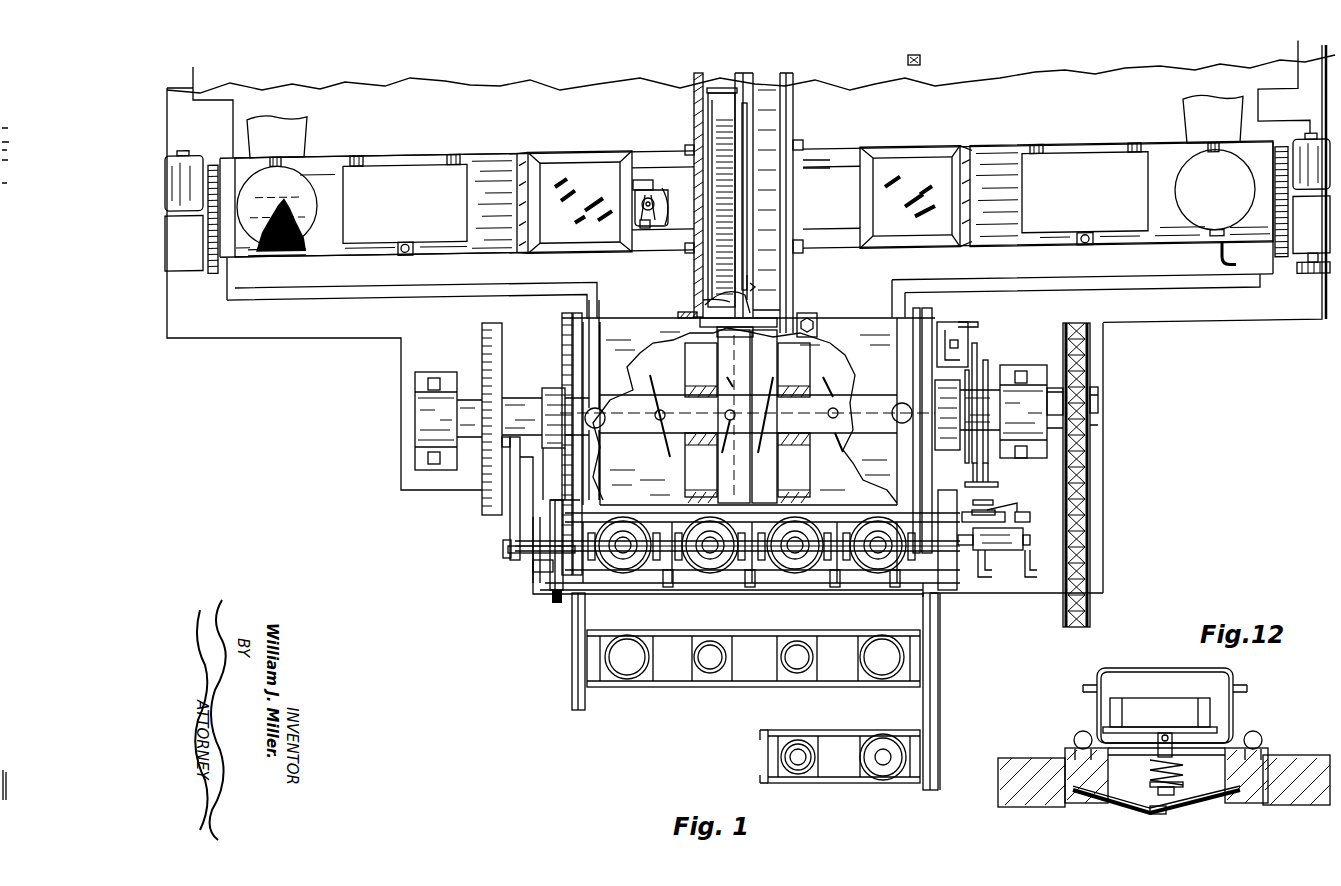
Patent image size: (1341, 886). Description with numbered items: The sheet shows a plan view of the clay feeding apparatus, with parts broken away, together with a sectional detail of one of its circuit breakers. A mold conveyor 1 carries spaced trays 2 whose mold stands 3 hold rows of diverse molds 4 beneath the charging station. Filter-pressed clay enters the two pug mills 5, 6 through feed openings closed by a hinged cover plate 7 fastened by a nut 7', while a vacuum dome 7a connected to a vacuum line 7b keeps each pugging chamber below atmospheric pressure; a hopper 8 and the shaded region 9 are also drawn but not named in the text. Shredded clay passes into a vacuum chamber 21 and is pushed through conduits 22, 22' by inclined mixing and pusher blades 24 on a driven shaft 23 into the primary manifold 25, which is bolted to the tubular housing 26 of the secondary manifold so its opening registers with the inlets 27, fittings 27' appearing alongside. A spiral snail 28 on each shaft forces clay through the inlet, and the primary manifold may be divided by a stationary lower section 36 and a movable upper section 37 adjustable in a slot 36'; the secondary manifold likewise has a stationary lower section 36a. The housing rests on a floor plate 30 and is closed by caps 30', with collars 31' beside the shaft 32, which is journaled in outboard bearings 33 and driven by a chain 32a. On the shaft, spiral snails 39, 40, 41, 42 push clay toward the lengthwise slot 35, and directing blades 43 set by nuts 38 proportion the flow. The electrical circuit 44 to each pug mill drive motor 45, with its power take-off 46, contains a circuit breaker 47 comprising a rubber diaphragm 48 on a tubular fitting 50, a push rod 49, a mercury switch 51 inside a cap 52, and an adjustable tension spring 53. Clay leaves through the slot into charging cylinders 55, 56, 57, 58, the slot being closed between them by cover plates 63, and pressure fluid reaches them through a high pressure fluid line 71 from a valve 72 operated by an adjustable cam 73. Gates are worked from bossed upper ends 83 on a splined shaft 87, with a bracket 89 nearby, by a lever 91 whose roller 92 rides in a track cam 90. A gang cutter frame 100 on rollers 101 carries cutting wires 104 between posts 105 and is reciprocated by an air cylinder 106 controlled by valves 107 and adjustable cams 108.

In FIG. 1, the mold conveyor 1 is at (572, 712).
In FIG. 1, the trays 2 is at (683, 686).
In FIG. 1, the mold stands 3 is at (800, 686).
In FIG. 1, the molds 4 is at (800, 786).
In FIG. 1, the pug mill 5 is at (492, 159).
In FIG. 1, the pug mill 6 is at (978, 159).
In FIG. 1, the hinged cover plate 7 is at (745, 177).
In FIG. 1, the nut 7' is at (727, 255).
In FIG. 1, the vacuum dome 7a is at (290, 186).
In FIG. 1, the vacuum line 7b is at (1215, 262).
In FIG. 1, the hopper 8 is at (326, 133).
In FIG. 1, the flame 9 is at (290, 255).
In FIG. 1, the vacuum chamber 21 is at (552, 161).
In FIG. 1, the conduit 22 is at (651, 186).
In FIG. 1, the conduit 22' is at (828, 154).
In FIG. 1, the driven shaft 23 is at (650, 227).
In FIG. 1, the mixing and pusher blades 24 is at (665, 230).
In FIG. 1, the primary manifold 25 is at (752, 301).
In FIG. 1, the tubular housing 26 is at (850, 318).
In FIG. 12, the tubular housing 26 is at (1008, 760).
In FIG. 1, the inlets 27 is at (738, 331).
In FIG. 1, the bracket 27' is at (759, 196).
In FIG. 1, the spiral snail 28 is at (712, 108).
In FIG. 1, the floor plate 30 is at (1214, 186).
In FIG. 1, the caps 30' is at (750, 437).
In FIG. 1, the collar 31' is at (747, 430).
In FIG. 1, the shaft 32 is at (510, 400).
In FIG. 1, the chain 32a is at (1095, 546).
In FIG. 1, the outboard bearings 33 is at (425, 376).
In FIG. 1, the slot 35 is at (628, 513).
In FIG. 1, the stationary lower section 36 is at (681, 303).
In FIG. 1, the slot 36' is at (787, 280).
In FIG. 1, the stationary lower section 36a is at (732, 461).
In FIG. 1, the vertically movable upper section 37 is at (750, 111).
In FIG. 1, the nuts 38 is at (838, 414).
In FIG. 1, the spiral snail 39 is at (640, 479).
In FIG. 1, the spiral snail 40 is at (690, 485).
In FIG. 1, the spiral snail 41 is at (812, 479).
In FIG. 1, the spiral snail 42 is at (850, 481).
In FIG. 1, the clay propelling, proportioning and directing blades 43 is at (659, 391).
In FIG. 1, the electrical circuit 44 is at (408, 291).
In FIG. 1, the pug mill drive motor 45 is at (210, 164).
In FIG. 1, the power take-off 46 is at (1310, 283).
In FIG. 1, the circuit breaker 47 is at (606, 417).
In FIG. 12, the circuit breaker 47 is at (1257, 719).
In FIG. 12, the rubber diaphragm 48 is at (1205, 809).
In FIG. 12, the push rod 49 is at (1150, 770).
In FIG. 12, the tubular fitting 50 is at (1290, 748).
In FIG. 12, the mercury switch 51 is at (1145, 712).
In FIG. 12, the cap 52 is at (1128, 668).
In FIG. 12, the adjustable tension spring 53 is at (1180, 770).
In FIG. 1, the charging cylinder 55 is at (622, 593).
In FIG. 1, the charging cylinder 56 is at (706, 593).
In FIG. 1, the charging cylinder 57 is at (792, 593).
In FIG. 1, the charging cylinder 58 is at (872, 593).
In FIG. 1, the cover plates 63 is at (750, 545).
In FIG. 1, the high pressure fluid line 71 is at (955, 356).
In FIG. 1, the valve 72 is at (968, 323).
In FIG. 1, the adjustable cam 73 is at (960, 461).
In FIG. 1, the upper ends of bail 83 is at (952, 585).
In FIG. 1, the splined shaft 87 is at (525, 570).
In FIG. 1, the bracket 89 is at (540, 574).
In FIG. 1, the track cam 90 is at (484, 497).
In FIG. 1, the lever 91 is at (521, 481).
In FIG. 1, the roller 92 is at (490, 469).
In FIG. 1, the open frame 100 is at (548, 608).
In FIG. 1, the rollers 101 is at (900, 598).
In FIG. 1, the cutting wires 104 is at (752, 579).
In FIG. 1, the posts 105 is at (845, 593).
In FIG. 1, the air cylinder 106 is at (1020, 575).
In FIG. 1, the valves 107 is at (1000, 490).
In FIG. 1, the adjustable cams 108 is at (978, 353).